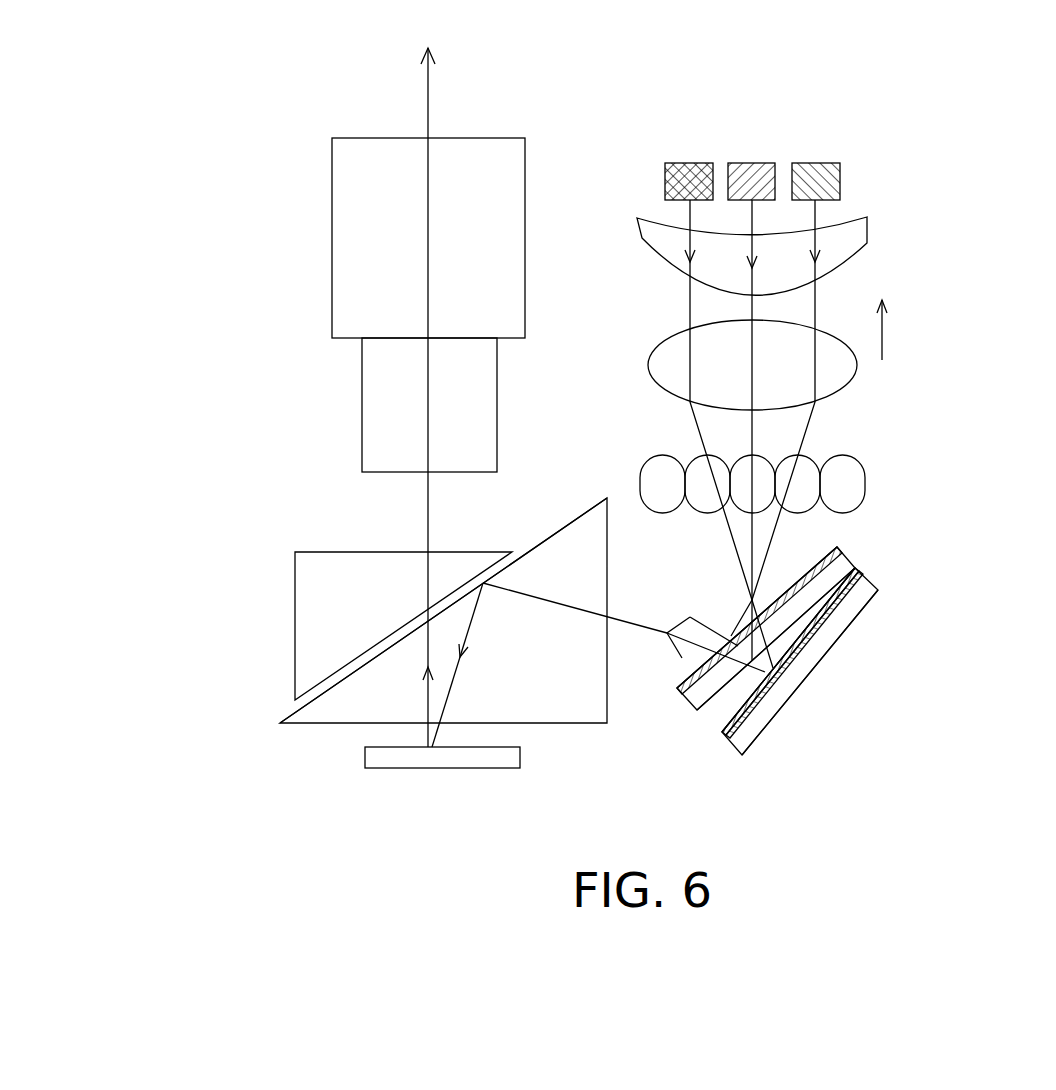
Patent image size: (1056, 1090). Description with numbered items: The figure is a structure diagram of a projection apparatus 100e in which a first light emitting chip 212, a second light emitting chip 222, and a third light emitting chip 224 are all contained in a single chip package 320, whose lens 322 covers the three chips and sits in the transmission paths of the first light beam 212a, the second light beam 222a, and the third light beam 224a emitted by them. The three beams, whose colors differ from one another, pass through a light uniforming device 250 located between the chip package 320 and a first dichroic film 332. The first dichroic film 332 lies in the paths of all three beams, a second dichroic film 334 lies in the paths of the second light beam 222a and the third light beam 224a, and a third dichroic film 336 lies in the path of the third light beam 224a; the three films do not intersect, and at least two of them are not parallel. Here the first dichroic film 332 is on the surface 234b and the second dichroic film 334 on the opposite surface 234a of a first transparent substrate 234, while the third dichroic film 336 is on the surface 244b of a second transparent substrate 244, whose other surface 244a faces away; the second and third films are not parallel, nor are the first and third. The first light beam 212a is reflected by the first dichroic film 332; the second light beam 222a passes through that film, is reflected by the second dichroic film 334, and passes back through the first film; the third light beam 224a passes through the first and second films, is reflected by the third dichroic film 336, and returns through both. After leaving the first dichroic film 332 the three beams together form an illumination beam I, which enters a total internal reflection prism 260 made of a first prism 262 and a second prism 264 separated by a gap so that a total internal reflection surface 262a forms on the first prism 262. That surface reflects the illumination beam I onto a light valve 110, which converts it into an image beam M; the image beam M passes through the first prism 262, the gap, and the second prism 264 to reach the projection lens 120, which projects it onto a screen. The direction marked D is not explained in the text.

The projection apparatus 100e is at (988, 817).
The light valve 110 is at (485, 760).
The projection lens 120 is at (347, 248).
The first light emitting chip 212 is at (815, 163).
The first light beam 212a is at (813, 213).
The second light emitting chip 222 is at (752, 163).
The second light beam 222a is at (747, 221).
The third light emitting chip 224 is at (690, 163).
The third light beam 224a is at (688, 213).
The first transparent substrate 234 is at (804, 653).
The surface 234a is at (705, 704).
The surface 234b is at (678, 673).
The second transparent substrate 244 is at (828, 691).
The surface 244a is at (812, 670).
The surface 244b is at (720, 714).
The light uniforming device 250 is at (858, 473).
The total internal reflection prism 260 is at (165, 797).
The first prism 262 is at (317, 717).
The total internal reflection surface 262a is at (365, 646).
The second prism 264 is at (312, 618).
The chip package 320 is at (670, 78).
The lens 322 is at (850, 238).
The first dichroic film 332 is at (843, 558).
The second dichroic film 334 is at (862, 564).
The third dichroic film 336 is at (843, 600).
The direction D is at (882, 333).
The illumination beam I is at (565, 607).
The image beam M is at (428, 525).